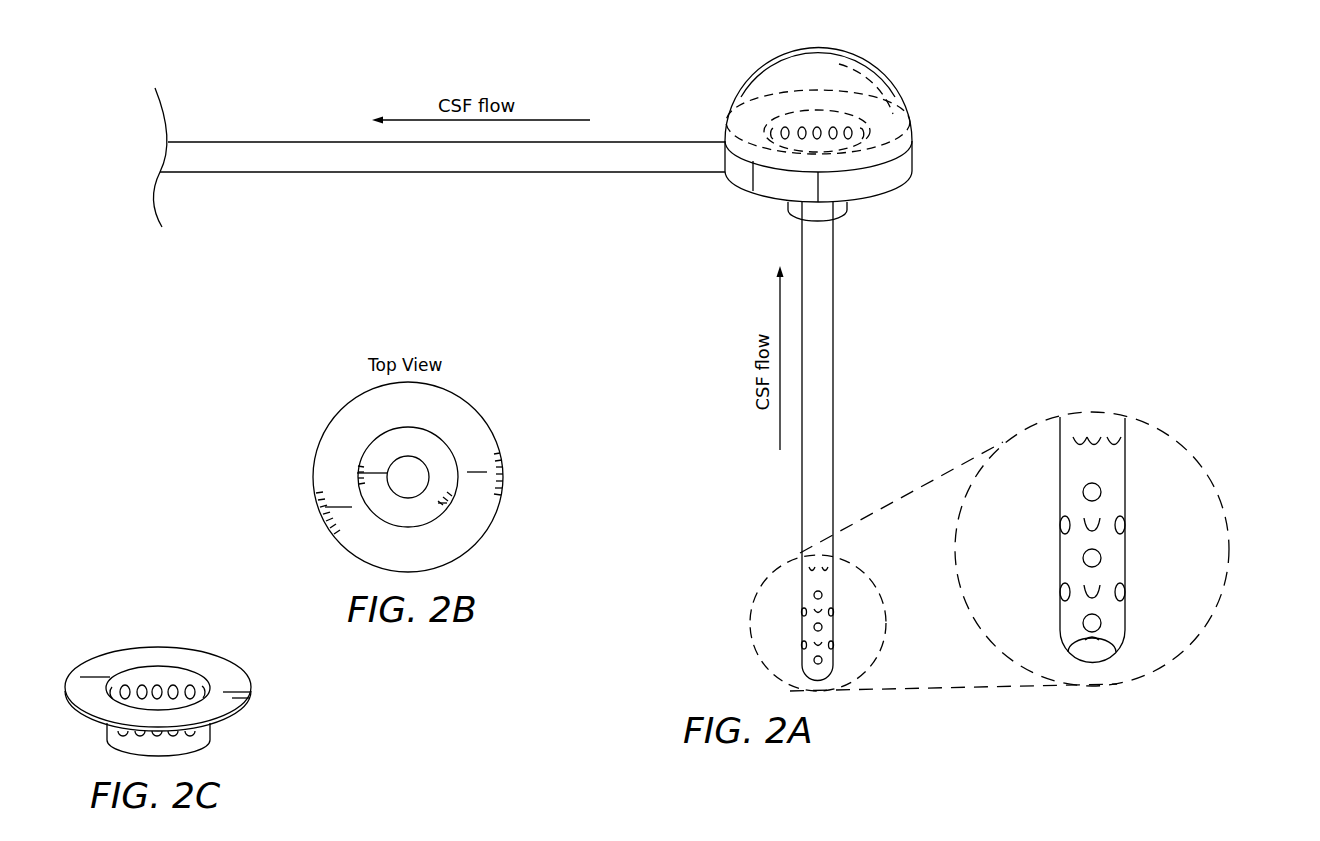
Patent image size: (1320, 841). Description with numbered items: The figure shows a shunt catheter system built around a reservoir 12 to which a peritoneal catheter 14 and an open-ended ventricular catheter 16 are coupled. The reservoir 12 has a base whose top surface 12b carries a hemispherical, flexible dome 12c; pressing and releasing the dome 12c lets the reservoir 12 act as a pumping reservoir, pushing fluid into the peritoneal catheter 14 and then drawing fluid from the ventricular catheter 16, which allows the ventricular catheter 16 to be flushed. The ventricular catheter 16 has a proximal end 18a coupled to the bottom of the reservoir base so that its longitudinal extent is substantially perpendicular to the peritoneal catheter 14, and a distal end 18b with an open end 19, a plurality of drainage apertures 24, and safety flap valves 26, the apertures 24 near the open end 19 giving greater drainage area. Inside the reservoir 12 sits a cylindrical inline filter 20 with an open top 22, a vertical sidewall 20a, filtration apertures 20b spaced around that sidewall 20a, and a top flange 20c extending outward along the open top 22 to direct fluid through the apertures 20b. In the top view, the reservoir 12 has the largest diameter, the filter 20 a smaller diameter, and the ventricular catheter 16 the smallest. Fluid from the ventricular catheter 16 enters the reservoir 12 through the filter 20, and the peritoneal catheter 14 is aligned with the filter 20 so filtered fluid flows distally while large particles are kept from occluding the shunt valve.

In FIG. 2A, the reservoir 12 is at (856, 30).
In FIG. 2B, the reservoir 12 is at (497, 428).
In FIG. 2A, the top surface 12b is at (878, 175).
In FIG. 2A, the flexible dome 12c is at (903, 97).
In FIG. 2A, the peritoneal catheter 14 is at (315, 172).
In FIG. 2A, the ventricular catheter 16 is at (837, 272).
In FIG. 2B, the ventricular catheter 16 is at (415, 483).
In FIG. 2A, the proximal end 18a is at (780, 232).
In FIG. 2A, the distal end 18b is at (767, 584).
In FIG. 2A, the open end 19 is at (812, 674).
In FIG. 2B, the inline filter 20 is at (386, 445).
In FIG. 2C, the inline filter 20 is at (208, 596).
In FIG. 2A, the vertical sidewall 20a is at (783, 117).
In FIG. 2C, the vertical sidewall 20a is at (108, 750).
In FIG. 2A, the filtration apertures 20b is at (849, 130).
In FIG. 2C, the filtration apertures 20b is at (143, 688).
In FIG. 2A, the top flange 20c is at (745, 121).
In FIG. 2C, the top flange 20c is at (228, 663).
In FIG. 2A, the open top 22 is at (810, 114).
In FIG. 2A, the drainage apertures 24 is at (1083, 493).
In FIG. 2A, the safety flap valves 26 is at (1122, 445).